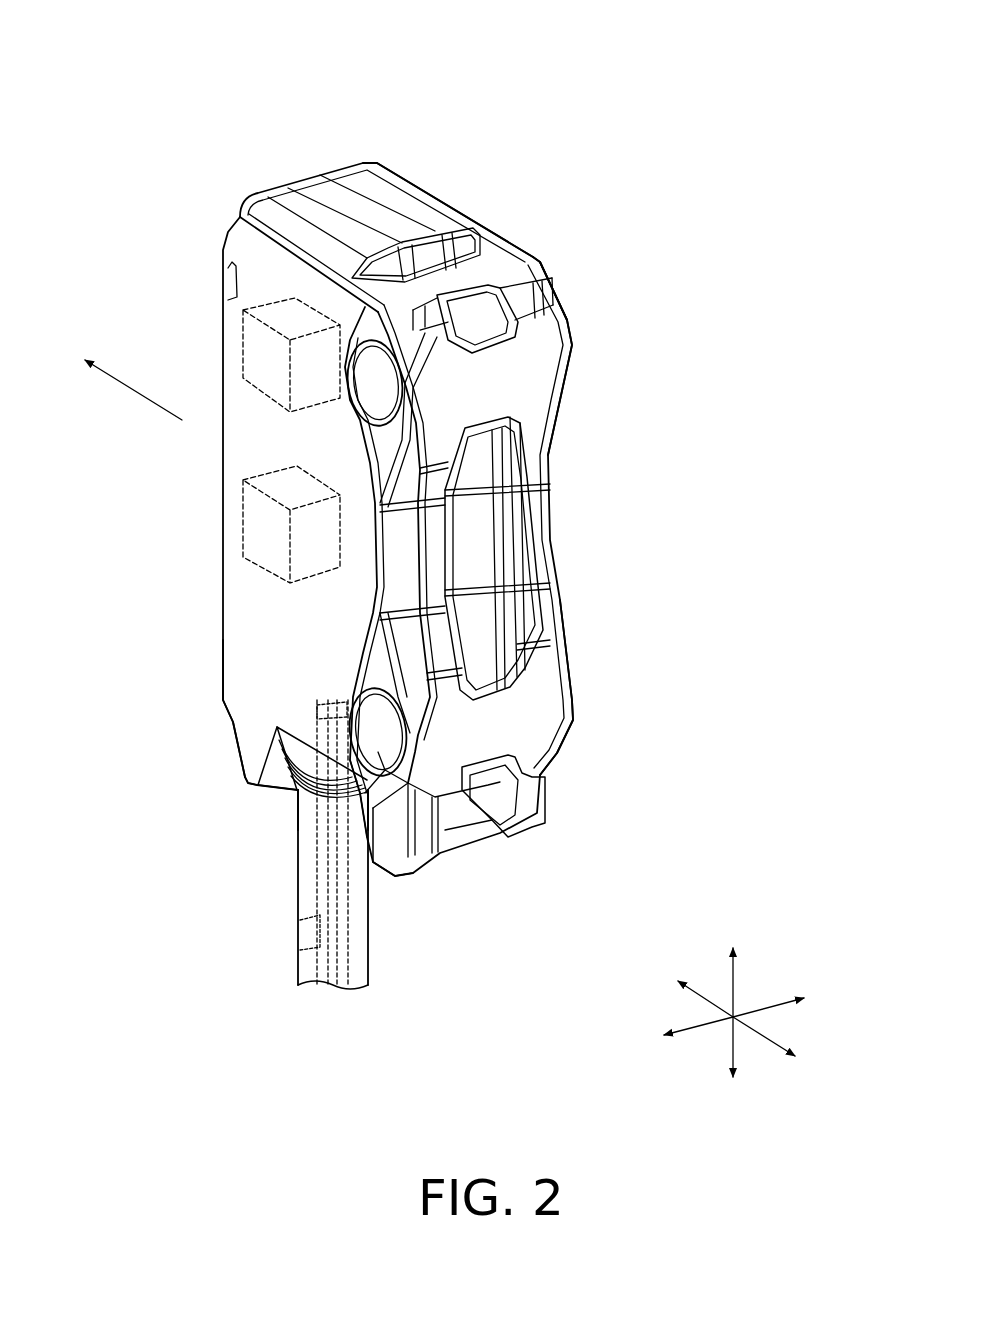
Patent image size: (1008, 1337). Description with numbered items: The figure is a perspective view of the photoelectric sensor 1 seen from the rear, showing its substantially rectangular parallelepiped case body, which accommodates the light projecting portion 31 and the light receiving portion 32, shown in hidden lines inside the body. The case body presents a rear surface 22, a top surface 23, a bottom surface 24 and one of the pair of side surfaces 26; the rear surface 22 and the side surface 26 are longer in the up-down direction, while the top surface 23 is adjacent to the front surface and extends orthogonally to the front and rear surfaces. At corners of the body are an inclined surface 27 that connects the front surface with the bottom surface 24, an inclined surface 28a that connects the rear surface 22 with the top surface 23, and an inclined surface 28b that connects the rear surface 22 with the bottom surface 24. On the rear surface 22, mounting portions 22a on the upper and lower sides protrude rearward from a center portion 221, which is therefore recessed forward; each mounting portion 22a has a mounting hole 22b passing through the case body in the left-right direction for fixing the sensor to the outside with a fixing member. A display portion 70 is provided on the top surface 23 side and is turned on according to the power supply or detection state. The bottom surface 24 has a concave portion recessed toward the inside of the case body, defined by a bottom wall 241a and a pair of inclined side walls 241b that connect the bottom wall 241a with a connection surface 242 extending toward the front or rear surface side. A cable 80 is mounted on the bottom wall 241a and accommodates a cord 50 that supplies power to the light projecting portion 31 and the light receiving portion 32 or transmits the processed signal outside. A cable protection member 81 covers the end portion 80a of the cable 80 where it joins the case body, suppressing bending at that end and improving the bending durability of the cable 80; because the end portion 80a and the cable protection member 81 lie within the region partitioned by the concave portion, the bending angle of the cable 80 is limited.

The photoelectric sensor 1 is at (213, 50).
The rear surface 22 is at (553, 543).
The mounting portion 22a is at (545, 368).
The mounting hole 22b is at (385, 383).
The center portion 221 is at (527, 523).
The top surface 23 is at (429, 196).
The bottom surface 24 is at (270, 801).
The bottom wall 241a is at (290, 725).
The side wall 241b is at (258, 785).
The connection surface 242 is at (445, 893).
The side surface 26 is at (247, 470).
The inclined surface 27 is at (230, 727).
The inclined surface 28a is at (467, 317).
The inclined surface 28b is at (543, 793).
The light projecting portion 31 is at (243, 365).
The light receiving portion 32 is at (245, 540).
The cord 50 is at (312, 918).
The display portion 70 is at (357, 200).
The cable 80 is at (290, 910).
The end portion of the cable 80a is at (277, 805).
The cable protection member 81 is at (298, 795).